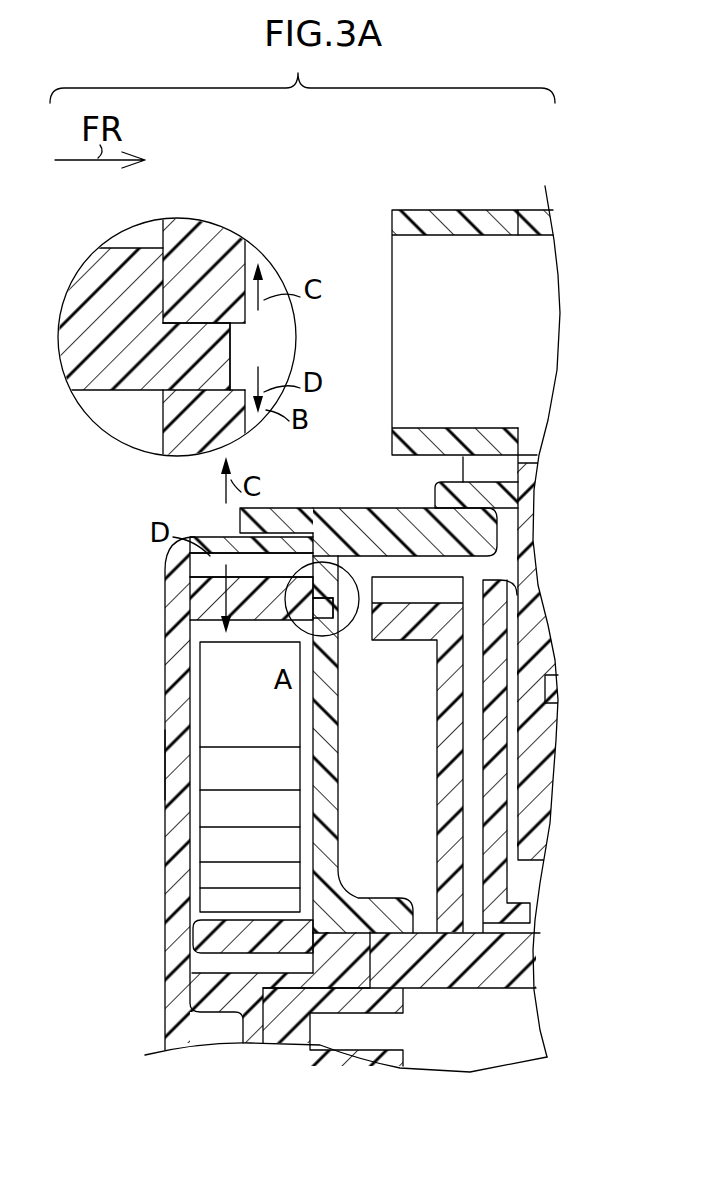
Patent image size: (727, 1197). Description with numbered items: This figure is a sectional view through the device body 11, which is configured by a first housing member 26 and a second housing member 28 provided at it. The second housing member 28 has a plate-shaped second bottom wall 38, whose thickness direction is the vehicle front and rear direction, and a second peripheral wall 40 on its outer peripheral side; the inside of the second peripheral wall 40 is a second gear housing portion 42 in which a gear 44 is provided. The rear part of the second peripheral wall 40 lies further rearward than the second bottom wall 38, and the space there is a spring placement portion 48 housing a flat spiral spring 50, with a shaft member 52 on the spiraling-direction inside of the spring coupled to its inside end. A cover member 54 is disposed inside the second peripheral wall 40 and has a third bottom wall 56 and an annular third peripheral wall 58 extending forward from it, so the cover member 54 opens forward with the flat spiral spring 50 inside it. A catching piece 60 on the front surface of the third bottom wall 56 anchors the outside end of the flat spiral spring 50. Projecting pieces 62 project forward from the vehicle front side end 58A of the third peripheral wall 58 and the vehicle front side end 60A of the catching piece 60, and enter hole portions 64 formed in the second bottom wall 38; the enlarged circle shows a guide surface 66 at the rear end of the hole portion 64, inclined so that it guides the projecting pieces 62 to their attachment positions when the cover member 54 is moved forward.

The device body 11 is at (378, 444).
The first housing member 26 is at (543, 533).
The second housing member 28 is at (331, 506).
The second bottom wall 38 is at (250, 262).
The second peripheral wall 40 is at (337, 560).
The second gear housing portion 42 is at (415, 845).
The gear 44 is at (437, 808).
The spring placement portion 48 is at (178, 626).
The flat spiral spring 50 is at (210, 708).
The shaft member 52 is at (190, 945).
The cover member 54 is at (164, 806).
The third bottom wall 56 is at (165, 763).
The third peripheral wall 58 is at (225, 550).
The vehicle front side end of the third peripheral wall 58A is at (345, 520).
The catching piece 60 is at (156, 246).
The vehicle front side end of the catching piece 60A is at (200, 273).
The projecting piece 62 is at (262, 352).
The hole portion 64 is at (262, 324).
The guide surface 66 is at (170, 393).